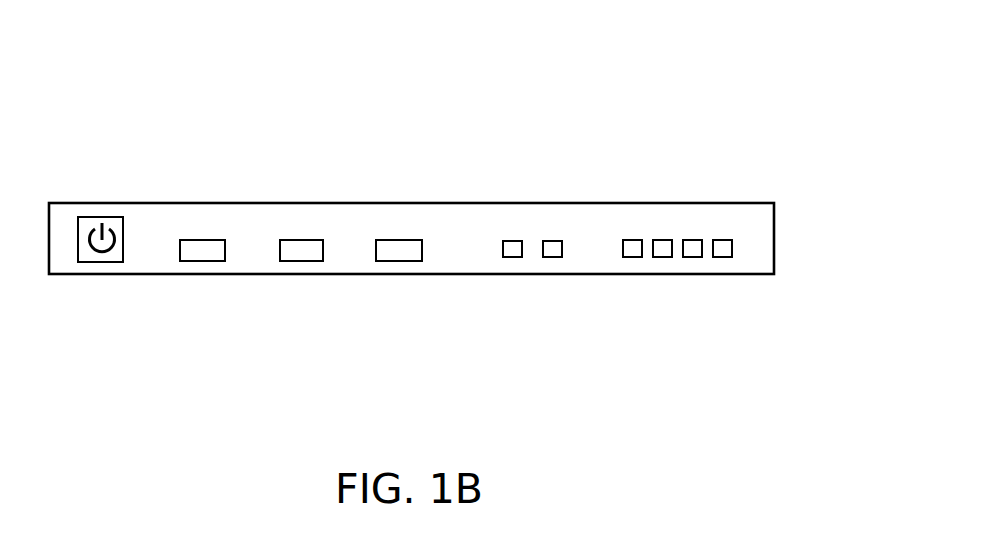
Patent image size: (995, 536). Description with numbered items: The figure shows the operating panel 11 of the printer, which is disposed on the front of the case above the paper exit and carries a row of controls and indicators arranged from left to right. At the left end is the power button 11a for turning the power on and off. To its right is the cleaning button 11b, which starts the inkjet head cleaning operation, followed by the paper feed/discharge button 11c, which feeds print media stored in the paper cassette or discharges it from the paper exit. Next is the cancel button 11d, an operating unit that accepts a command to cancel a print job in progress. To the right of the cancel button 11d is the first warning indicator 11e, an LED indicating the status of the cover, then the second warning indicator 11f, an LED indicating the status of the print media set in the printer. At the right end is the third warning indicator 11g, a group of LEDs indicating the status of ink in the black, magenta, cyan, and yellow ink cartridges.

The operating panel 11 is at (372, 186).
The power button 11a is at (100, 212).
The cleaning button 11b is at (207, 262).
The paper feed/discharge button 11c is at (305, 262).
The cancel button 11d is at (401, 262).
The first warning indicator 11e is at (512, 257).
The second warning indicator 11f is at (550, 257).
The third warning indicator 11g is at (678, 266).